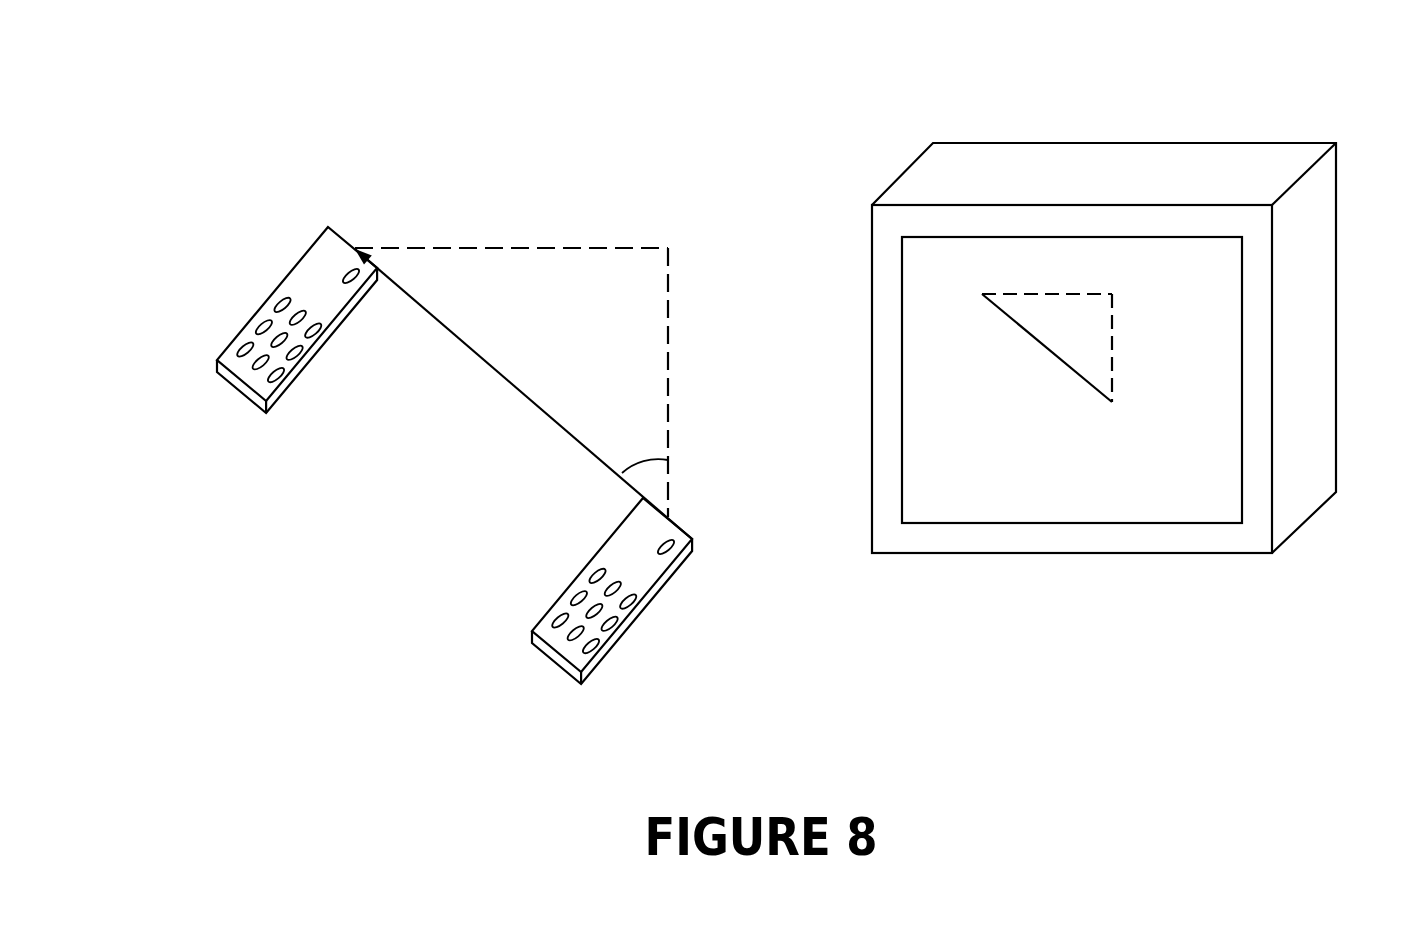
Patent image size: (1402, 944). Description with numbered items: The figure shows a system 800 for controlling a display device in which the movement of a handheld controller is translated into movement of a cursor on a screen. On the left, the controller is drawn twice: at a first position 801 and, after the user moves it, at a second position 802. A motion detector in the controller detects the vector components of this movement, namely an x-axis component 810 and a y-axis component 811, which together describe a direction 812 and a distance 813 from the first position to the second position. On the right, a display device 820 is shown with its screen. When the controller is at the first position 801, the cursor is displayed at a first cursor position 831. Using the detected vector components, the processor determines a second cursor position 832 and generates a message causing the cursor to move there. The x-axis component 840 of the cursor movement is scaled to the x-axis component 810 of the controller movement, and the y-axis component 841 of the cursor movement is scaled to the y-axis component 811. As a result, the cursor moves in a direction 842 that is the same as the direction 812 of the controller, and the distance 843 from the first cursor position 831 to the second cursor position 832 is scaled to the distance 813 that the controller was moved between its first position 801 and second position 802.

The system for controlling a display device 800 is at (229, 72).
The first position 801 is at (638, 536).
The second position 802 is at (307, 262).
The x-axis component 810 is at (669, 312).
The y-axis component 811 is at (465, 247).
The direction 812 is at (650, 448).
The distance 813 is at (500, 377).
The display device 820 is at (1302, 505).
The first cursor position 831 is at (1112, 404).
The second cursor position 832 is at (982, 296).
The x-axis component 840 is at (1115, 315).
The y-axis component 841 is at (1004, 291).
The direction 842 is at (1111, 363).
The distance 843 is at (1059, 354).